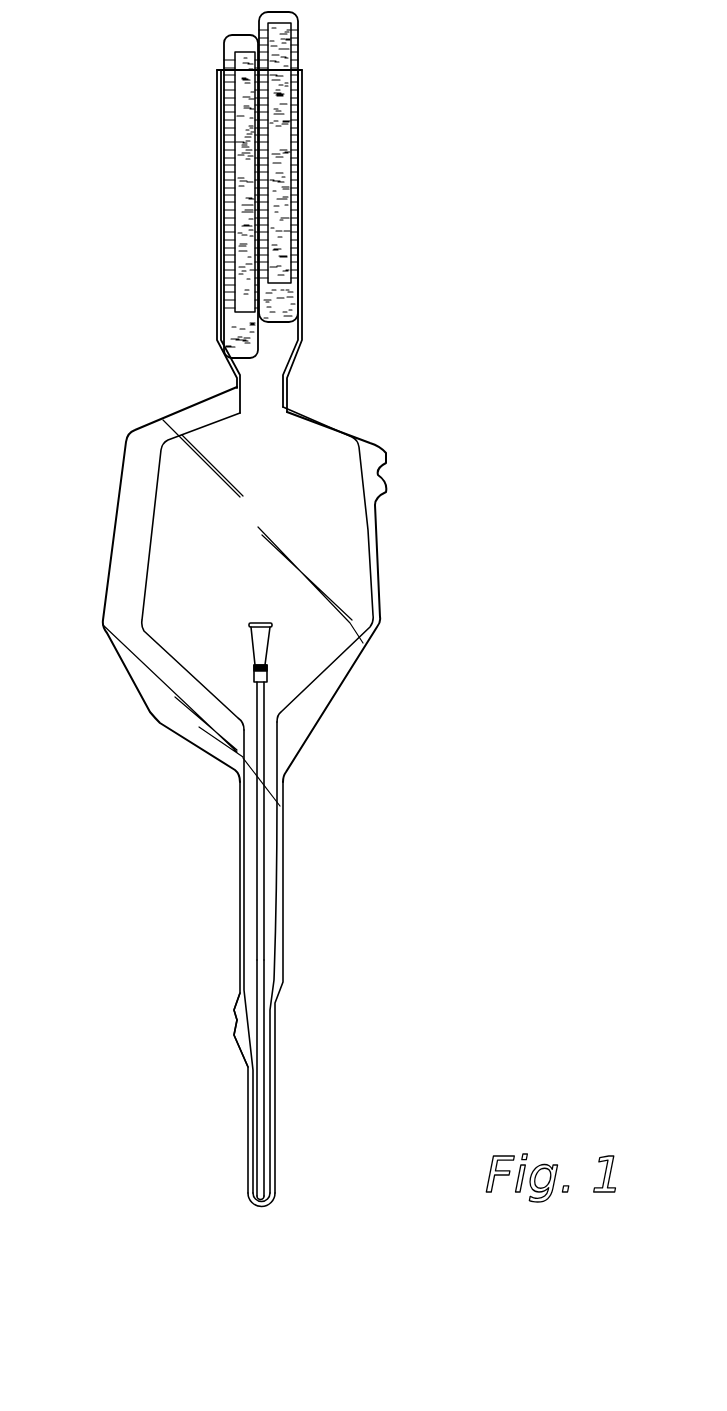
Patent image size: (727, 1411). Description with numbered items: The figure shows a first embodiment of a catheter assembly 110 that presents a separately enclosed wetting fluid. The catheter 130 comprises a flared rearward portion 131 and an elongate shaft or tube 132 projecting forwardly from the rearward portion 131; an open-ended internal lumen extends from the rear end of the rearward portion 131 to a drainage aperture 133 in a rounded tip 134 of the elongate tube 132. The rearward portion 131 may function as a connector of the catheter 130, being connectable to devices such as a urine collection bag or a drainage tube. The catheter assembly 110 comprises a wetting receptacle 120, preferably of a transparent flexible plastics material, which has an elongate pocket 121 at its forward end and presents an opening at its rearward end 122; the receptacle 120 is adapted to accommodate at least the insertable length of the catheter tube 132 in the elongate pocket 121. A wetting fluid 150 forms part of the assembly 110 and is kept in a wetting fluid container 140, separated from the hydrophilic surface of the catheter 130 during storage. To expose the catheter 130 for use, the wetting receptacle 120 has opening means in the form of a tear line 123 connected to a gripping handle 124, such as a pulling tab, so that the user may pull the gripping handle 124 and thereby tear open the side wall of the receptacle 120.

The catheter assembly 110 is at (110, 418).
The wetting receptacle 120 is at (133, 543).
The elongate pocket 121 is at (210, 990).
The rearward end 122 is at (218, 212).
The tear line 123 is at (237, 1043).
The gripping handle 124 is at (237, 1008).
The catheter 130 is at (377, 896).
The flared rearward portion 131 is at (262, 642).
The elongate tube 132 is at (263, 975).
The drainage aperture 133 is at (264, 1192).
The rounded tip 134 is at (262, 1205).
The wetting fluid container 140 is at (253, 46).
The wetting fluid 150 is at (277, 117).